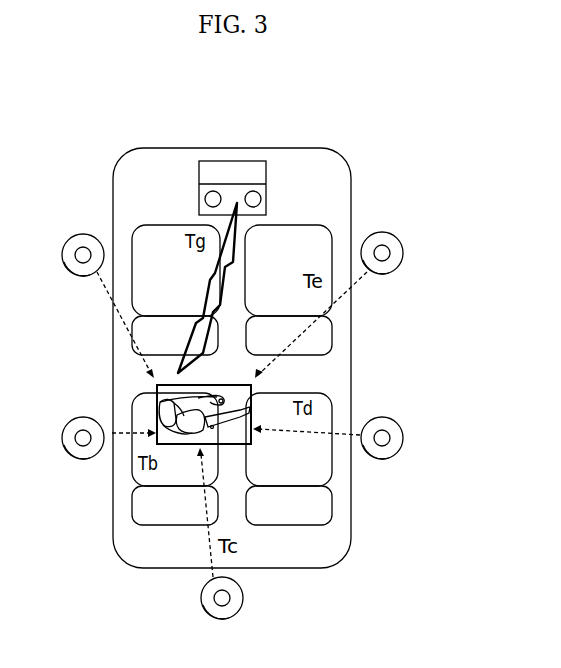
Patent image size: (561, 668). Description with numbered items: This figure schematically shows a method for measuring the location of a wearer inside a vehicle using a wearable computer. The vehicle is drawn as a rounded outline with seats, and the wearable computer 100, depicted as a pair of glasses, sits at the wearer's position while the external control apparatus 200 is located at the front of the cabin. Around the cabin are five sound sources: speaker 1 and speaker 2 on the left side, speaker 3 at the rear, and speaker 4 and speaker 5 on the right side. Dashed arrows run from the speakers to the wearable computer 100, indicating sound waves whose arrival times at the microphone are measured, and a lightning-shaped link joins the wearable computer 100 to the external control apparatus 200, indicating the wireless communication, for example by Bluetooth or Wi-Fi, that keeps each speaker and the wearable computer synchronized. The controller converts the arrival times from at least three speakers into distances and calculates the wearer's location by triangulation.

The display device (3D glasses) 100 is at (186, 445).
The external control apparatus 200 is at (231, 161).
The speaker 1 is at (69, 240).
The speaker 2 is at (69, 421).
The speaker 3 is at (175, 598).
The speaker 4 is at (401, 421).
The speaker 5 is at (402, 236).